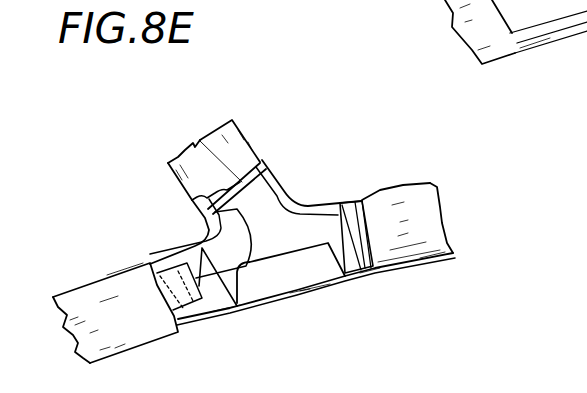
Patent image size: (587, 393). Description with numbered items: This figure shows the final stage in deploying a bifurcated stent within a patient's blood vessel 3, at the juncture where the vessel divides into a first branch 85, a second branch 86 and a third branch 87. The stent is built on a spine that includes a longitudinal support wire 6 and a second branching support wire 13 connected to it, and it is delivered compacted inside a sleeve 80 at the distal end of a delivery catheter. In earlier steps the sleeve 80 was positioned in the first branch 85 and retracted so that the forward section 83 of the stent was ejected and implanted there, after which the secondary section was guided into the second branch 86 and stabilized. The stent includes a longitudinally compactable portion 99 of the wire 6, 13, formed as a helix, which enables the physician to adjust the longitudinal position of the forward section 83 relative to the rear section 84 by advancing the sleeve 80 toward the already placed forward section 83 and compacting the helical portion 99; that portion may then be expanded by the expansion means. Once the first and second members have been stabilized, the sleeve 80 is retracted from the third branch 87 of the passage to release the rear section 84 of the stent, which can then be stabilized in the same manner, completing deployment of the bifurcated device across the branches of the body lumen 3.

The longitudinal support wire 6 is at (200, 140).
The second branch 86 is at (257, 192).
The longitudinally compactable portion 99 is at (343, 200).
The forward section 83 is at (393, 186).
The first branch 85 is at (423, 247).
The rear section 84 is at (176, 280).
The sleeve 80 is at (155, 265).
The third branch 87 is at (127, 308).
The body lumen 3 is at (270, 284).
The second branching support wire 13 is at (306, 246).